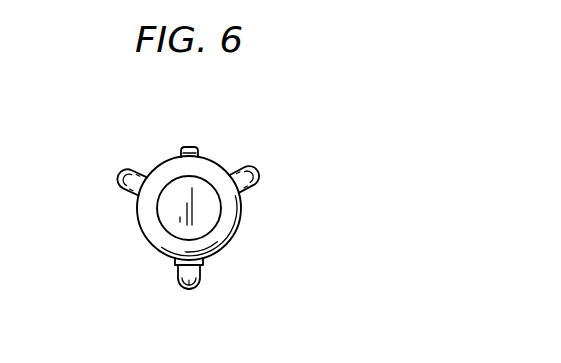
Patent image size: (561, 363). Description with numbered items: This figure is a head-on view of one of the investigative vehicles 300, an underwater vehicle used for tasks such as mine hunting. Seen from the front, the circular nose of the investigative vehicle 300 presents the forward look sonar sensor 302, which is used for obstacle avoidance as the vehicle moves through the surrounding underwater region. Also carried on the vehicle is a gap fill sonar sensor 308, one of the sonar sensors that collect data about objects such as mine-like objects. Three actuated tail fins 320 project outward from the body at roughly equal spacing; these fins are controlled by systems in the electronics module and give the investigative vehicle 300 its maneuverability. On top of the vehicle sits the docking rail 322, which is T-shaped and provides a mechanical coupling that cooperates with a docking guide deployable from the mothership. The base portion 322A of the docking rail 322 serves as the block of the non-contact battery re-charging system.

The investigative vehicle 300 is at (306, 104).
The forward look sonar sensor 302 is at (169, 219).
The gap fill sonar sensor 308 is at (203, 265).
The actuated tail fins 320 is at (255, 167).
The docking rail 322 is at (183, 147).
The base portion 322A is at (200, 152).